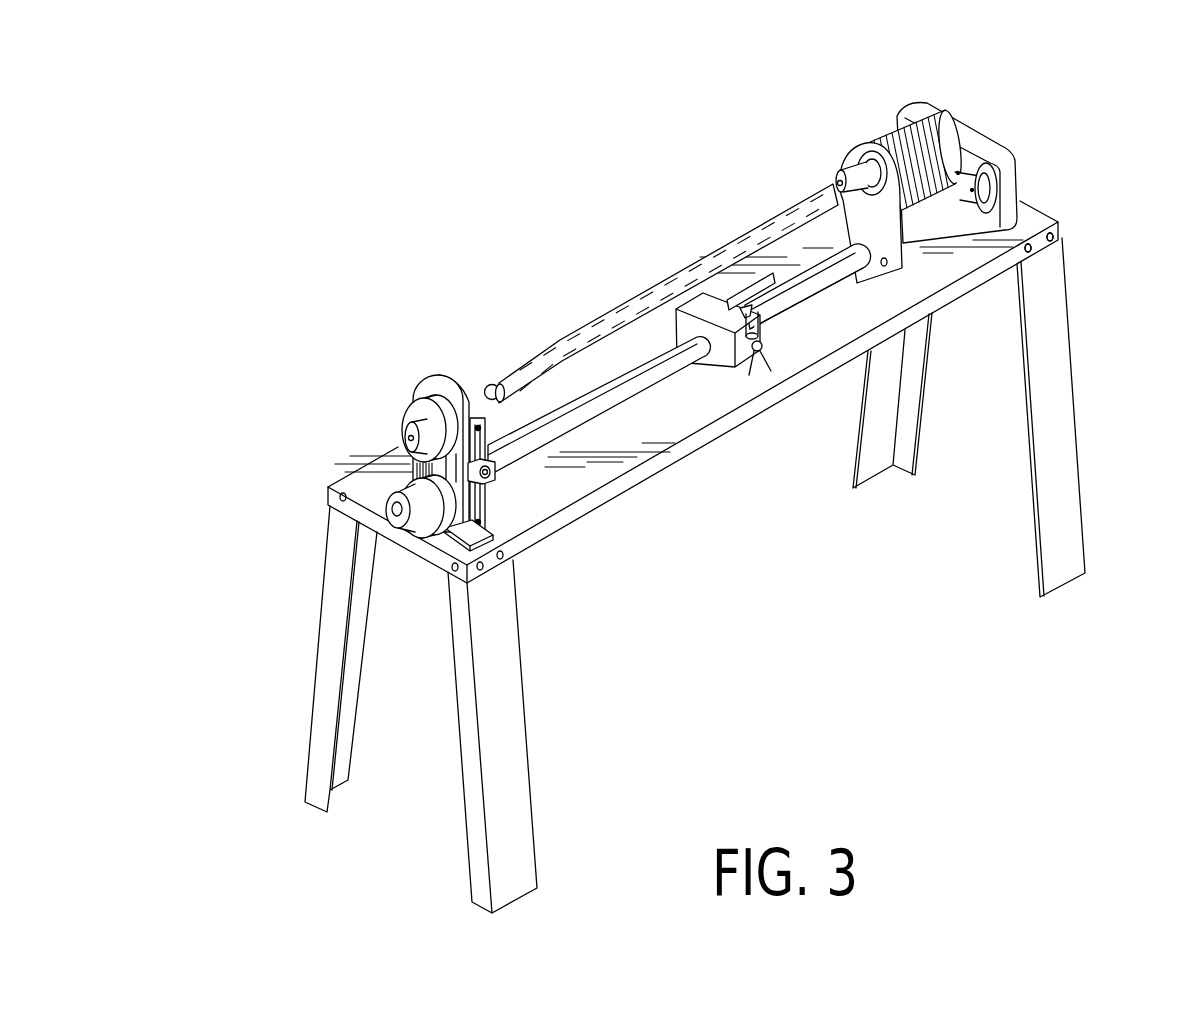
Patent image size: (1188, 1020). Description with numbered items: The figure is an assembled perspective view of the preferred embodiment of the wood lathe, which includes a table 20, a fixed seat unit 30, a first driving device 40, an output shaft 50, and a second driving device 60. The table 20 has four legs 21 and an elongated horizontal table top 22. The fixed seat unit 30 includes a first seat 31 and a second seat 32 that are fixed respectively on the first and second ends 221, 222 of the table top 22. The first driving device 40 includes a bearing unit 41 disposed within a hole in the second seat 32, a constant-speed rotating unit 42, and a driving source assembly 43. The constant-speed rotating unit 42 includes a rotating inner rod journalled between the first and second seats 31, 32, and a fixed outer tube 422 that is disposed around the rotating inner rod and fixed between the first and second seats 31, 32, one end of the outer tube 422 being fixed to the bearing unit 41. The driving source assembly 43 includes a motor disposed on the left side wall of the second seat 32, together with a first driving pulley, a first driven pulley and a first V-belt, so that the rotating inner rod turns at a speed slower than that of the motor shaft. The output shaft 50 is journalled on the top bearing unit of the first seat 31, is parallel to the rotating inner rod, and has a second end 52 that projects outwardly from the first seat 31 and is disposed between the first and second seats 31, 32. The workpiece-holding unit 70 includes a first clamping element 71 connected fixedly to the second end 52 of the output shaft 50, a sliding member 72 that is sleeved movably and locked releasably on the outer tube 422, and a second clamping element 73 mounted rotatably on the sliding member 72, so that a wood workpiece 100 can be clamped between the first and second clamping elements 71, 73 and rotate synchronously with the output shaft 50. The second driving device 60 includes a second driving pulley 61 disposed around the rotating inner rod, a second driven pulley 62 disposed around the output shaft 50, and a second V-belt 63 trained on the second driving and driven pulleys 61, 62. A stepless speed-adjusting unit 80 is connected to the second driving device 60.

The table 20 is at (681, 547).
The legs 21 is at (1077, 477).
The table top 22 is at (727, 432).
The first end of the table top 221 is at (498, 524).
The second end of the table top 222 is at (1032, 244).
The fixed seat unit 30 is at (491, 427).
The first seat 31 is at (430, 376).
The second seat 32 is at (982, 120).
The first driving device 40 is at (612, 430).
The bearing unit 41 is at (990, 172).
The constant-speed rotating unit 42 is at (792, 300).
The fixed outer tube 422 is at (820, 288).
The driving source assembly 43 is at (887, 133).
The output shaft 50 is at (495, 324).
The second end of the output shaft 52 is at (462, 378).
The second driving device 60 is at (363, 450).
The second driving pulley 61 is at (390, 490).
The second driven pulley 62 is at (404, 408).
The second V-belt 63 is at (410, 440).
The workpiece-holding unit 70 is at (875, 283).
The first clamping element 71 is at (495, 383).
The sliding member 72 is at (894, 266).
The second clamping element 73 is at (838, 187).
The stepless speed-adjusting unit 80 is at (497, 480).
The wood workpiece 100 is at (606, 312).